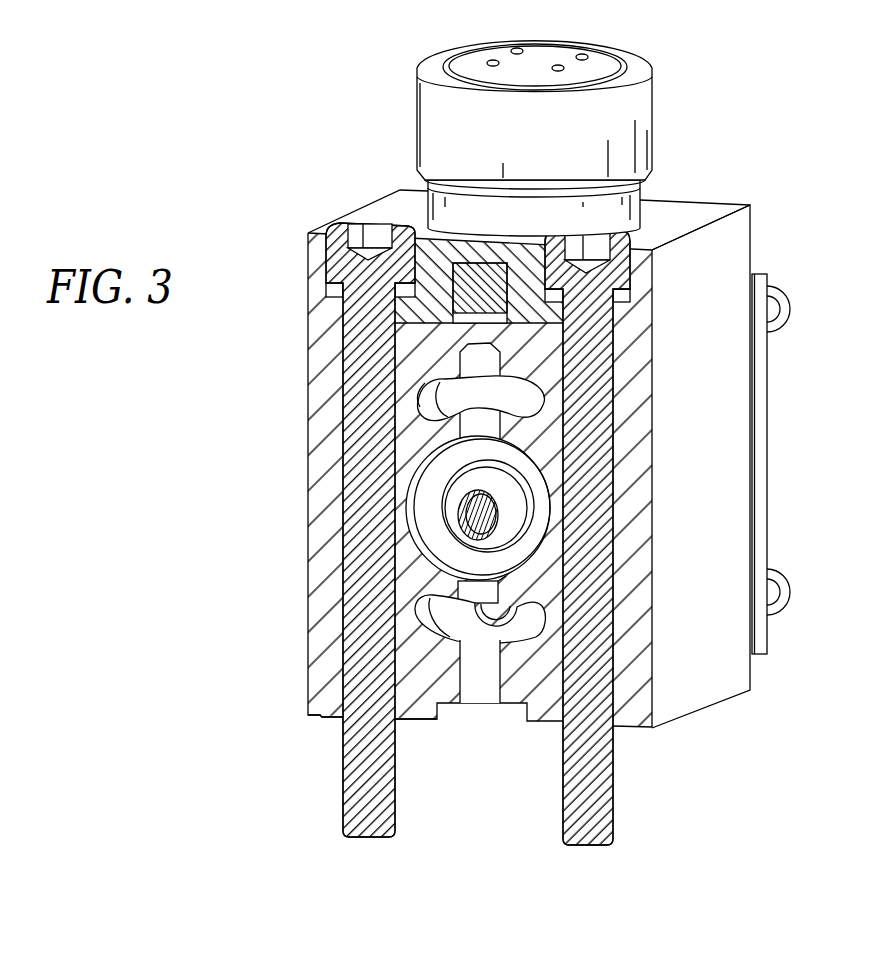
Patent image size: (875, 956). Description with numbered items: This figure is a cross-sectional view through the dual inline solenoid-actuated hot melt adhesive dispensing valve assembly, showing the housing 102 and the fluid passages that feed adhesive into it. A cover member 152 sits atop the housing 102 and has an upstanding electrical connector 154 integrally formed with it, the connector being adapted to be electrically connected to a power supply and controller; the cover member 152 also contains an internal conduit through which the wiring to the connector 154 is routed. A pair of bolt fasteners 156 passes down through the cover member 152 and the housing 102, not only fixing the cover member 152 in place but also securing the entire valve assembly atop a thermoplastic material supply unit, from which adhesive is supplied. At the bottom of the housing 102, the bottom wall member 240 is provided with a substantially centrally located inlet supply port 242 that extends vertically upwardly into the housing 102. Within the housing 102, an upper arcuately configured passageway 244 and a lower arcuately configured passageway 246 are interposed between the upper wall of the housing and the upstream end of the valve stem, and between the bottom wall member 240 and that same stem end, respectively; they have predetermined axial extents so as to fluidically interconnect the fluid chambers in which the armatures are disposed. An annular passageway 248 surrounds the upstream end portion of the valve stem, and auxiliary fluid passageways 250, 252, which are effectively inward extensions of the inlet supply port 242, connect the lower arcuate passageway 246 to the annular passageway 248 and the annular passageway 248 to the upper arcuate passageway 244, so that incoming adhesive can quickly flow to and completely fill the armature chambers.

The housing 102 is at (708, 667).
The cover member 152 is at (688, 218).
The electrical connector 154 is at (637, 106).
The bolt fasteners 156 is at (368, 475).
The bottom wall member 240 is at (327, 715).
The inlet supply port 242 is at (485, 684).
The upper arcuately configured passageway 244 is at (508, 398).
The lower arcuately configured passageway 246 is at (442, 615).
The annular passageway 248 is at (428, 515).
The auxiliary fluid passageway 250 is at (475, 589).
The auxiliary fluid passageway 252 is at (478, 422).